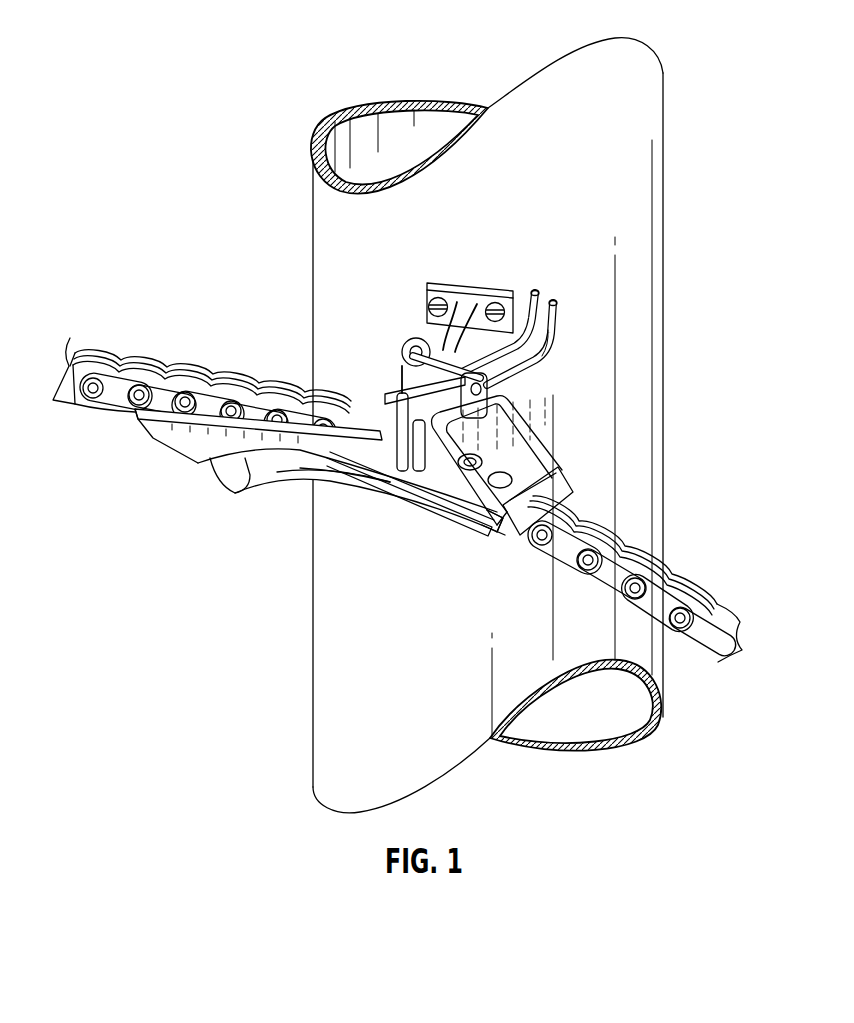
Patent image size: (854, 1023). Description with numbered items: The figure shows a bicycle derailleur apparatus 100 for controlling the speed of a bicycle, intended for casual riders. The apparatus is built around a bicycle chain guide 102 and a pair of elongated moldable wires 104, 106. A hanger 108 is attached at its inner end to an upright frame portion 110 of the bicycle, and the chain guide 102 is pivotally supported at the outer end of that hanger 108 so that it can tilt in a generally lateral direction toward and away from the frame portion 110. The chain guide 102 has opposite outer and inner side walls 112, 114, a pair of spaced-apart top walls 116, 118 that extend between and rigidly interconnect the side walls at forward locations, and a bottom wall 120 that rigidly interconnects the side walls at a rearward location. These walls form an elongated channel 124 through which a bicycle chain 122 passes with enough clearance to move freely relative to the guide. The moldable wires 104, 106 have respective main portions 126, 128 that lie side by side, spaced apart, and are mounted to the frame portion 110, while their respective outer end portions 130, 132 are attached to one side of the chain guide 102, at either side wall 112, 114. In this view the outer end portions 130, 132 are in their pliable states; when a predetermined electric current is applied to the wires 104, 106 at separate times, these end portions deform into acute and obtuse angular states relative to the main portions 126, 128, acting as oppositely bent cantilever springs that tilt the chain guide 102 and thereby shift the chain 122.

The bicycle derailleur apparatus 100 is at (164, 26).
The bicycle chain guide 102 is at (322, 488).
The moldable wire 104 is at (556, 295).
The moldable wire 106 is at (533, 280).
The hanger 108 is at (452, 280).
The upright frame portion 110 is at (663, 263).
The outer side wall 112 is at (463, 495).
The inner side wall 114 is at (540, 445).
The top wall 116 is at (393, 383).
The top wall 118 is at (560, 483).
The bottom wall 120 is at (140, 432).
The bicycle chain 122 is at (667, 556).
The elongated channel 124 is at (258, 373).
The main portion 126 is at (540, 368).
The main portion 128 is at (403, 342).
The outer end portion 130 is at (438, 470).
The outer end portion 132 is at (388, 487).